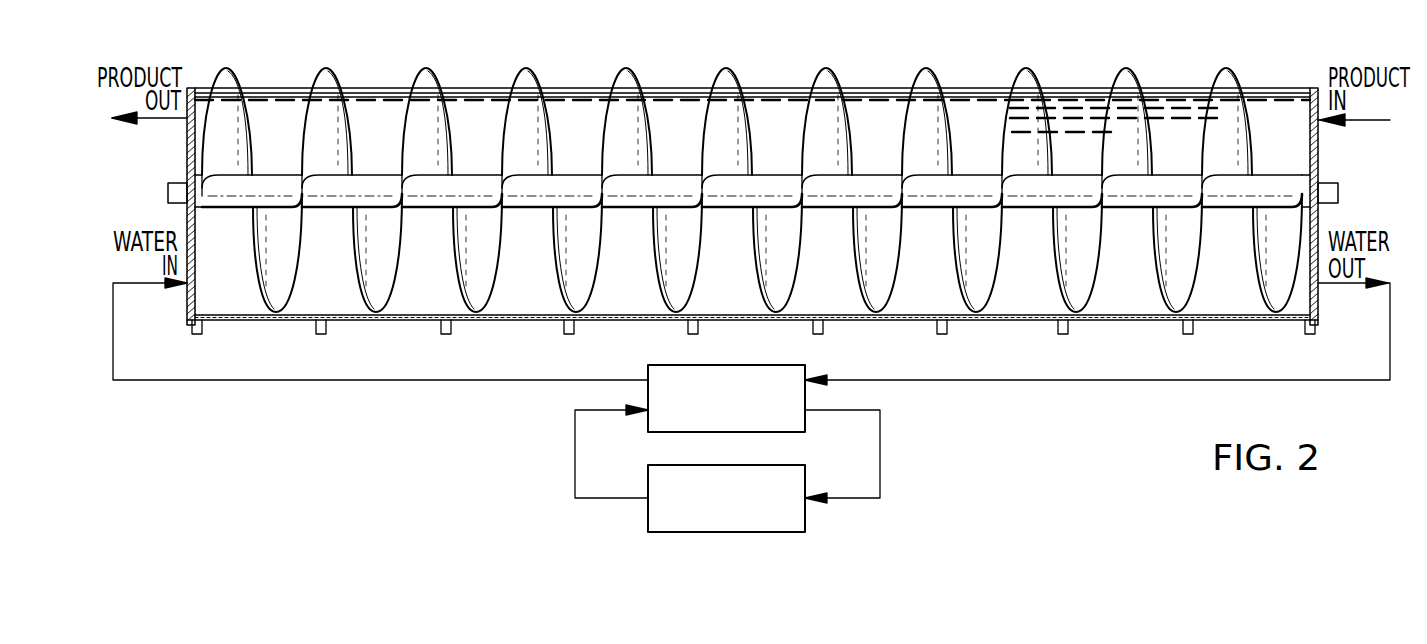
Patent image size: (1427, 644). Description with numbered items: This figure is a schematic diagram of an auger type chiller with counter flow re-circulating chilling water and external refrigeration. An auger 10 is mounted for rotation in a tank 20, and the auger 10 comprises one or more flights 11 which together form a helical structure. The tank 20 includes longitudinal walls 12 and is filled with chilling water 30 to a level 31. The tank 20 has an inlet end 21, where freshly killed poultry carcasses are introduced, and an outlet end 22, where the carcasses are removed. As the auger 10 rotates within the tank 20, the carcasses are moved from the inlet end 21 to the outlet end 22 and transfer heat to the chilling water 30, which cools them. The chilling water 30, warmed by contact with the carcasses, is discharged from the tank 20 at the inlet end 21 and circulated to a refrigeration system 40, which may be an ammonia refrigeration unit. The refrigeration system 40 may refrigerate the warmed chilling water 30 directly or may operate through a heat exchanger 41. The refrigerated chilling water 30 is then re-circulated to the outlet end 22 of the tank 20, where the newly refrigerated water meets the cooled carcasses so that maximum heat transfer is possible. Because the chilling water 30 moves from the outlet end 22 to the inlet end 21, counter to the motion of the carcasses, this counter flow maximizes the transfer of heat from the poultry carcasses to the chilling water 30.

The auger 10 is at (527, 42).
The flights 11 is at (323, 80).
The longitudinal walls 12 is at (262, 90).
The tank 20 is at (363, 86).
The inlet end 21 is at (1318, 158).
The outlet end 22 is at (187, 153).
The chilling water 30 is at (1095, 116).
The level 31 is at (575, 100).
The refrigeration system 40 is at (663, 522).
The heat exchanger 41 is at (666, 368).